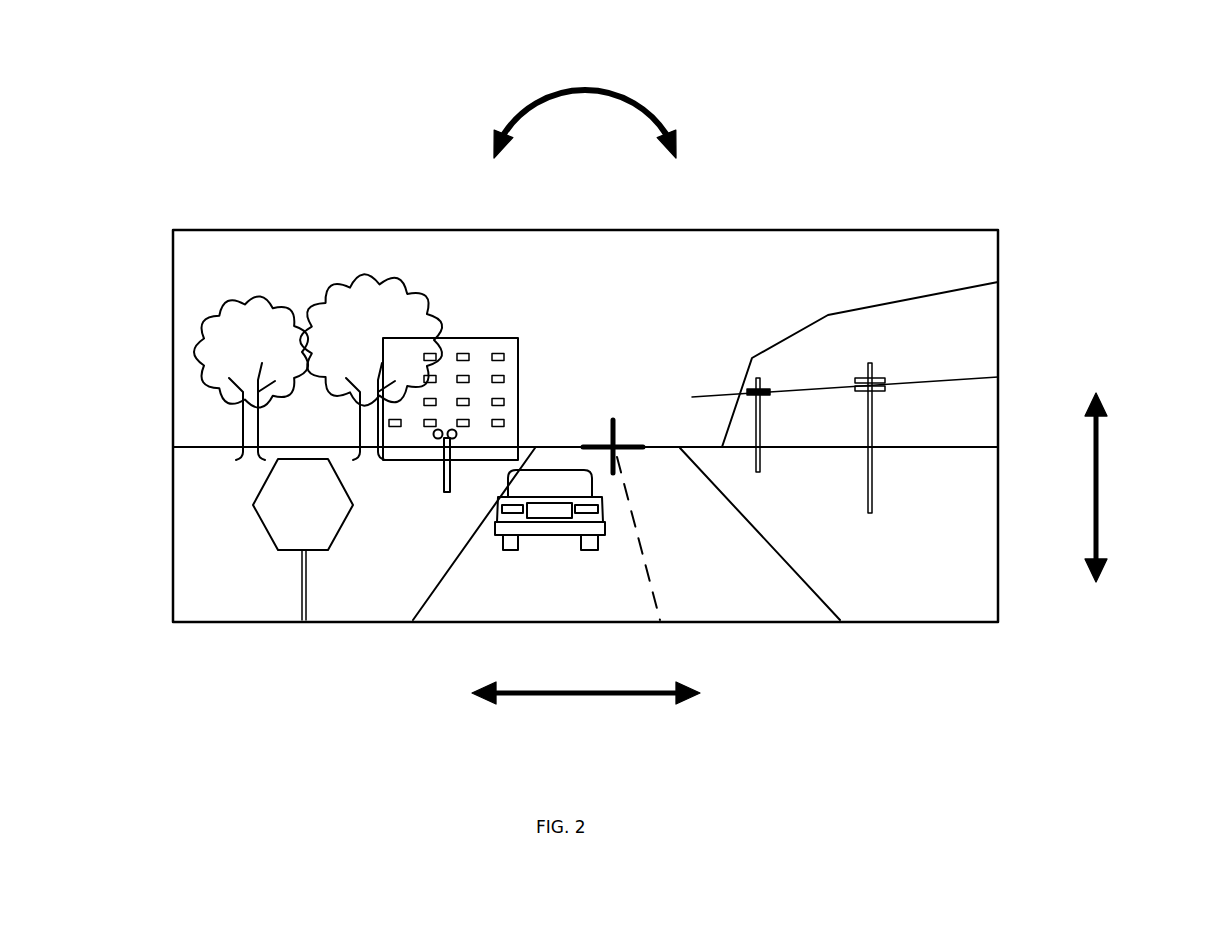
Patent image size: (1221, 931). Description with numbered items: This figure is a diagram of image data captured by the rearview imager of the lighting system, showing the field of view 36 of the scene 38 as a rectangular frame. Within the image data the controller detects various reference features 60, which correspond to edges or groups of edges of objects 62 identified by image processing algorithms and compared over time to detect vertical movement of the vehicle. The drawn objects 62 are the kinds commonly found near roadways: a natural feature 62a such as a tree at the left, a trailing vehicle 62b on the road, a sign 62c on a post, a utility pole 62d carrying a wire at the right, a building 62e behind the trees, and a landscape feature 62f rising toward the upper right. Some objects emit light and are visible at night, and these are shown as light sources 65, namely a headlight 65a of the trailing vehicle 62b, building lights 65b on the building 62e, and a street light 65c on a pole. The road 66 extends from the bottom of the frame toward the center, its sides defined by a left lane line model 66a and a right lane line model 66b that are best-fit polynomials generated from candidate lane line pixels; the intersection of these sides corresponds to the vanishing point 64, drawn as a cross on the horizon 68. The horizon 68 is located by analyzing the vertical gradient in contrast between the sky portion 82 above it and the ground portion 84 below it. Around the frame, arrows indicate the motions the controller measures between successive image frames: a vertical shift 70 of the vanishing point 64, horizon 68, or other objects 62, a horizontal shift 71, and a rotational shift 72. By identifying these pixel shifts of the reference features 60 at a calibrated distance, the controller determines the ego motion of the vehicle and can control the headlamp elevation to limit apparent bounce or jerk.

The field of view 36 is at (707, 230).
The scene 38 is at (979, 236).
The reference features 60 is at (585, 435).
The objects 62 is at (587, 280).
The natural feature 62a is at (228, 337).
The trailing vehicle 62b is at (505, 492).
The sign 62c is at (297, 522).
The utility pole 62d is at (760, 428).
The building 62e is at (457, 353).
The landscape feature 62f is at (828, 337).
The vanishing point 64 is at (618, 445).
The light sources 65 is at (565, 500).
The headlight 65a is at (603, 507).
The building lights 65b is at (507, 403).
The street lights 65c is at (450, 455).
The road 66 is at (617, 534).
The left lane line model 66a is at (808, 583).
The right lane line model 66b is at (437, 582).
The horizon 68 is at (907, 449).
The vertical shift 70 is at (1098, 512).
The horizontal shift 71 is at (588, 693).
The rotational shift 72 is at (593, 92).
The sky portion 82 is at (655, 363).
The ground portion 84 is at (810, 511).